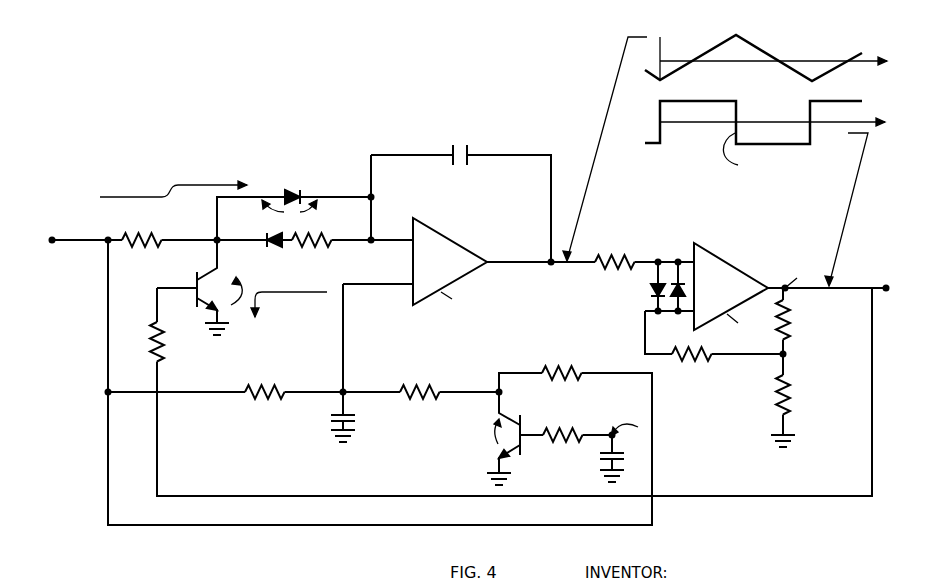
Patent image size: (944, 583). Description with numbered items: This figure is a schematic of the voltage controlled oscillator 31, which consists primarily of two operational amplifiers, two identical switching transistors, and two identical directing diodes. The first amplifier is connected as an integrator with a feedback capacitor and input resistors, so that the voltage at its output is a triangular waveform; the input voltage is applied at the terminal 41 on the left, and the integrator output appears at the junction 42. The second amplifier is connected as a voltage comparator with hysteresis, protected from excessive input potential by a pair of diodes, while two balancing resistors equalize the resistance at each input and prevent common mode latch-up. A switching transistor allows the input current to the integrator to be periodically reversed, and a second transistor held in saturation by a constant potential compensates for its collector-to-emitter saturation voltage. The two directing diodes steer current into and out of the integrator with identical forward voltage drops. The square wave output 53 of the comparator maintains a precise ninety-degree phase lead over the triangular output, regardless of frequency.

The voltage controlled oscillator 31 is at (281, 556).
The input terminal 41 is at (52, 243).
The integrator output junction 42 is at (548, 266).
The square wave output 53 is at (886, 291).